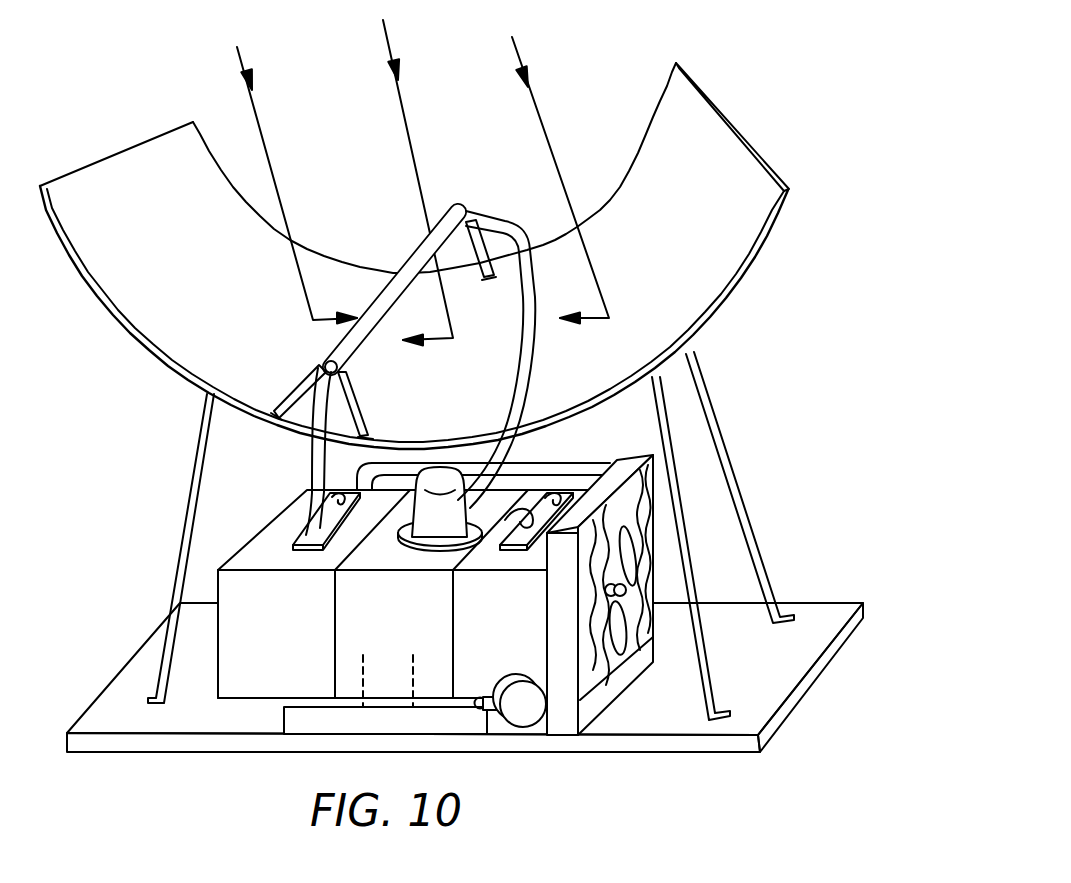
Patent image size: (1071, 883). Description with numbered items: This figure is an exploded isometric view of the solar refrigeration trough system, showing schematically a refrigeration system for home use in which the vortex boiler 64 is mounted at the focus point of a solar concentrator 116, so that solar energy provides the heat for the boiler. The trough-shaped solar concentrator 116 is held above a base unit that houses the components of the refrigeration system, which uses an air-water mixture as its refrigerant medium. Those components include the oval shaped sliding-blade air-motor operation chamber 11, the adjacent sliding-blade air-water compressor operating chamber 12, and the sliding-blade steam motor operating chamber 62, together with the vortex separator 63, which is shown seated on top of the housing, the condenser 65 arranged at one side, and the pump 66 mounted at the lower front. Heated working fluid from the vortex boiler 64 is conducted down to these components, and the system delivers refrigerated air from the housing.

The solar concentrator 116 is at (103, 157).
The vortex boiler 64 is at (408, 253).
The vortex separator 63 is at (447, 470).
The condenser 65 is at (612, 457).
The pump 66 is at (530, 668).
The sliding-blade steam motor operating chamber 62 is at (215, 683).
The sliding-blade air-motor operation chamber 11 is at (332, 613).
The sliding-blade air-water compressor operating chamber 12 is at (452, 605).